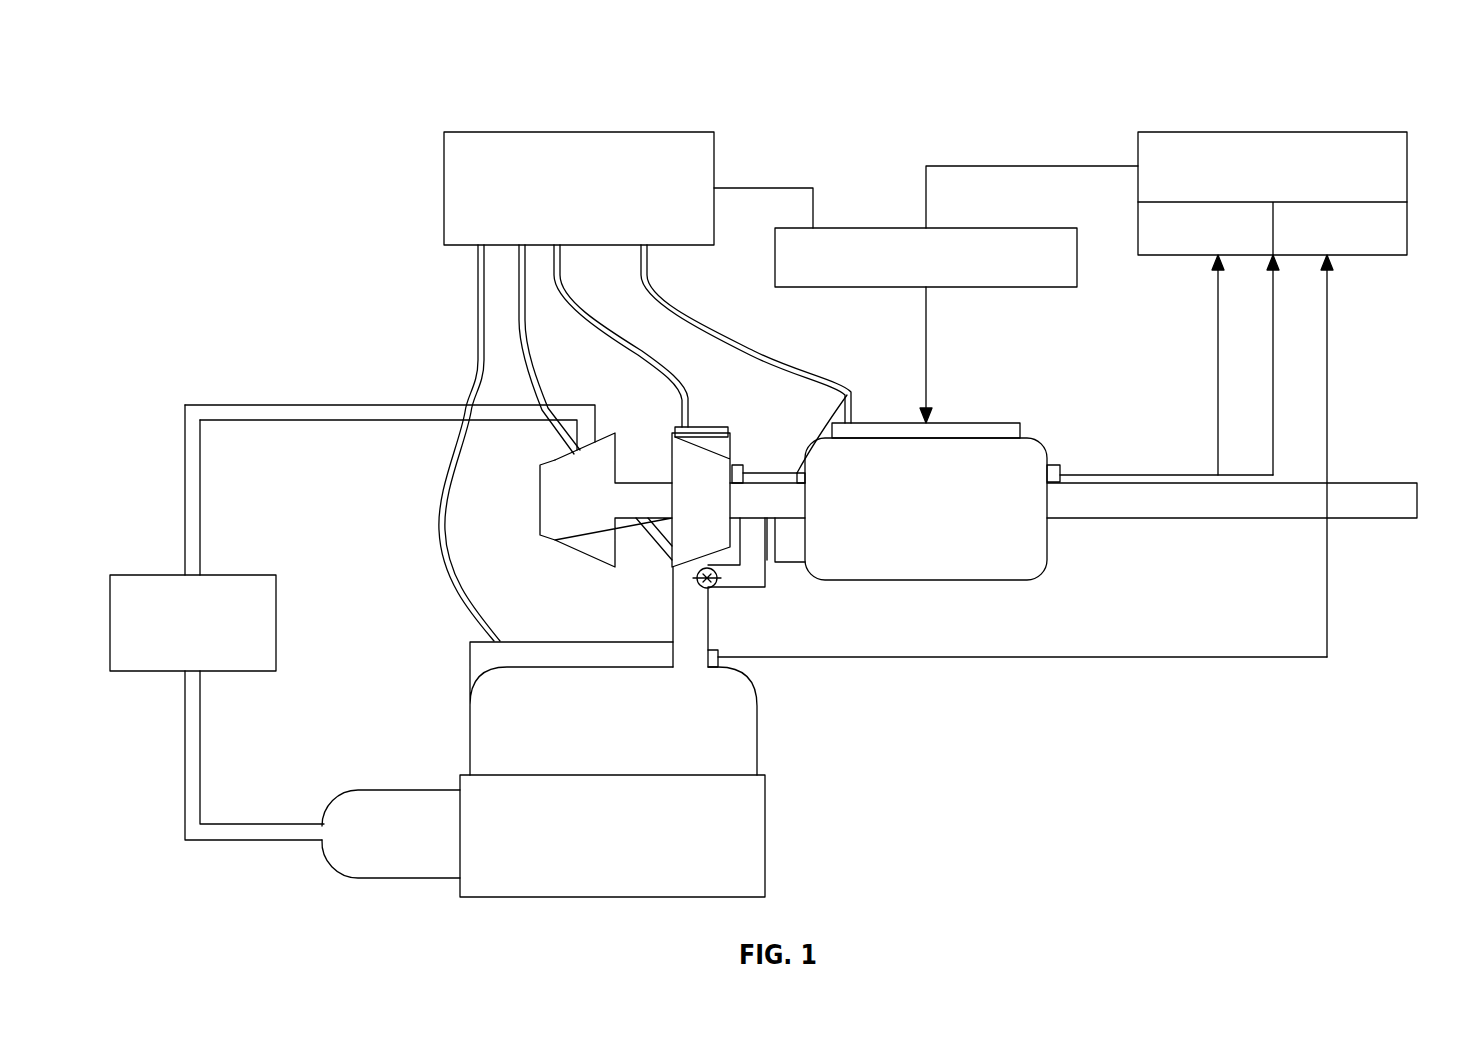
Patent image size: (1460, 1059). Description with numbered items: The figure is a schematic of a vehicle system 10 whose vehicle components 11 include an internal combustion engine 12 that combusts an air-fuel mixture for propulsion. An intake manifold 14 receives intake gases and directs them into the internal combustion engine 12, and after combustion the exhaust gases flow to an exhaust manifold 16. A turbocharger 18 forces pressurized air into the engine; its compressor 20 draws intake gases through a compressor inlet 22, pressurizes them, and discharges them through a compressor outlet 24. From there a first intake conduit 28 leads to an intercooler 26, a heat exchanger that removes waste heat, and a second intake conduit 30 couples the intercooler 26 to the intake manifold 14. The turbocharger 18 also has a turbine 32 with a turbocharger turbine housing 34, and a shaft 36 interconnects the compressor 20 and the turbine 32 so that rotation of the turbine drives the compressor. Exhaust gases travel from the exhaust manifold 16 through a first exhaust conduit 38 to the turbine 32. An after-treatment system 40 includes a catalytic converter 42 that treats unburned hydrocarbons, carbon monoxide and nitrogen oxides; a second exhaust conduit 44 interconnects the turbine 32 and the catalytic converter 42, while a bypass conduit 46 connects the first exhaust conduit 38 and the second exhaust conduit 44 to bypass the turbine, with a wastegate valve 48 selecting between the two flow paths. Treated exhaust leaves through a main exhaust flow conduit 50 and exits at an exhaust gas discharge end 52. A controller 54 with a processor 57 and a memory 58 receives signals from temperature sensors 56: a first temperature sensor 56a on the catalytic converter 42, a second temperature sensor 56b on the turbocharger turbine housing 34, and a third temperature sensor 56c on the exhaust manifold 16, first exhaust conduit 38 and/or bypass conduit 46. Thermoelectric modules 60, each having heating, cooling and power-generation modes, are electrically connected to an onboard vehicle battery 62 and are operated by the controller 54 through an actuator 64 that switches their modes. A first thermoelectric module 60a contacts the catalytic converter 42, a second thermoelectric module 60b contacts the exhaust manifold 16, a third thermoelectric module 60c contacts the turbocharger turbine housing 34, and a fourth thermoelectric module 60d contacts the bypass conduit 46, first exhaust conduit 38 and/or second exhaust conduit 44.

The vehicle system 10 is at (274, 88).
The vehicle components 11 is at (697, 899).
The internal combustion engine 12 is at (510, 899).
The intake manifold 14 is at (366, 789).
The exhaust manifold 16 is at (484, 715).
The turbocharger 18 is at (528, 536).
The compressor 20 is at (573, 555).
The compressor inlet 22 is at (540, 480).
The compressor outlet 24 is at (589, 404).
The intercooler 26 is at (132, 575).
The first intake conduit 28 is at (262, 403).
The second intake conduit 30 is at (262, 843).
The turbine 32 is at (670, 467).
The turbocharger turbine housing 34 is at (738, 441).
The shaft 36 is at (644, 549).
The first exhaust conduit 38 is at (678, 634).
The after-treatment system 40 is at (985, 369).
The catalytic converter 42 is at (1050, 556).
The second exhaust conduit 44 is at (843, 393).
The bypass conduit 46 is at (765, 570).
The wastegate valve 48 is at (708, 590).
The main exhaust flow conduit 50 is at (1367, 483).
The exhaust gas discharge end 52 is at (1418, 505).
The controller 54 is at (1167, 131).
The temperature sensors 56 is at (798, 470).
The first temperature sensor 56a is at (1053, 465).
The second temperature sensor 56b is at (736, 464).
The third temperature sensor 56c is at (722, 654).
The processor 57 is at (1205, 232).
The memory 58 is at (1340, 232).
The thermoelectric modules 60 is at (715, 427).
The first thermoelectric module 60a is at (953, 422).
The second thermoelectric module 60b is at (480, 637).
The third thermoelectric module 60c is at (693, 417).
The fourth thermoelectric module 60d is at (778, 563).
The onboard vehicle battery 62 is at (484, 131).
The actuator 64 is at (1060, 228).